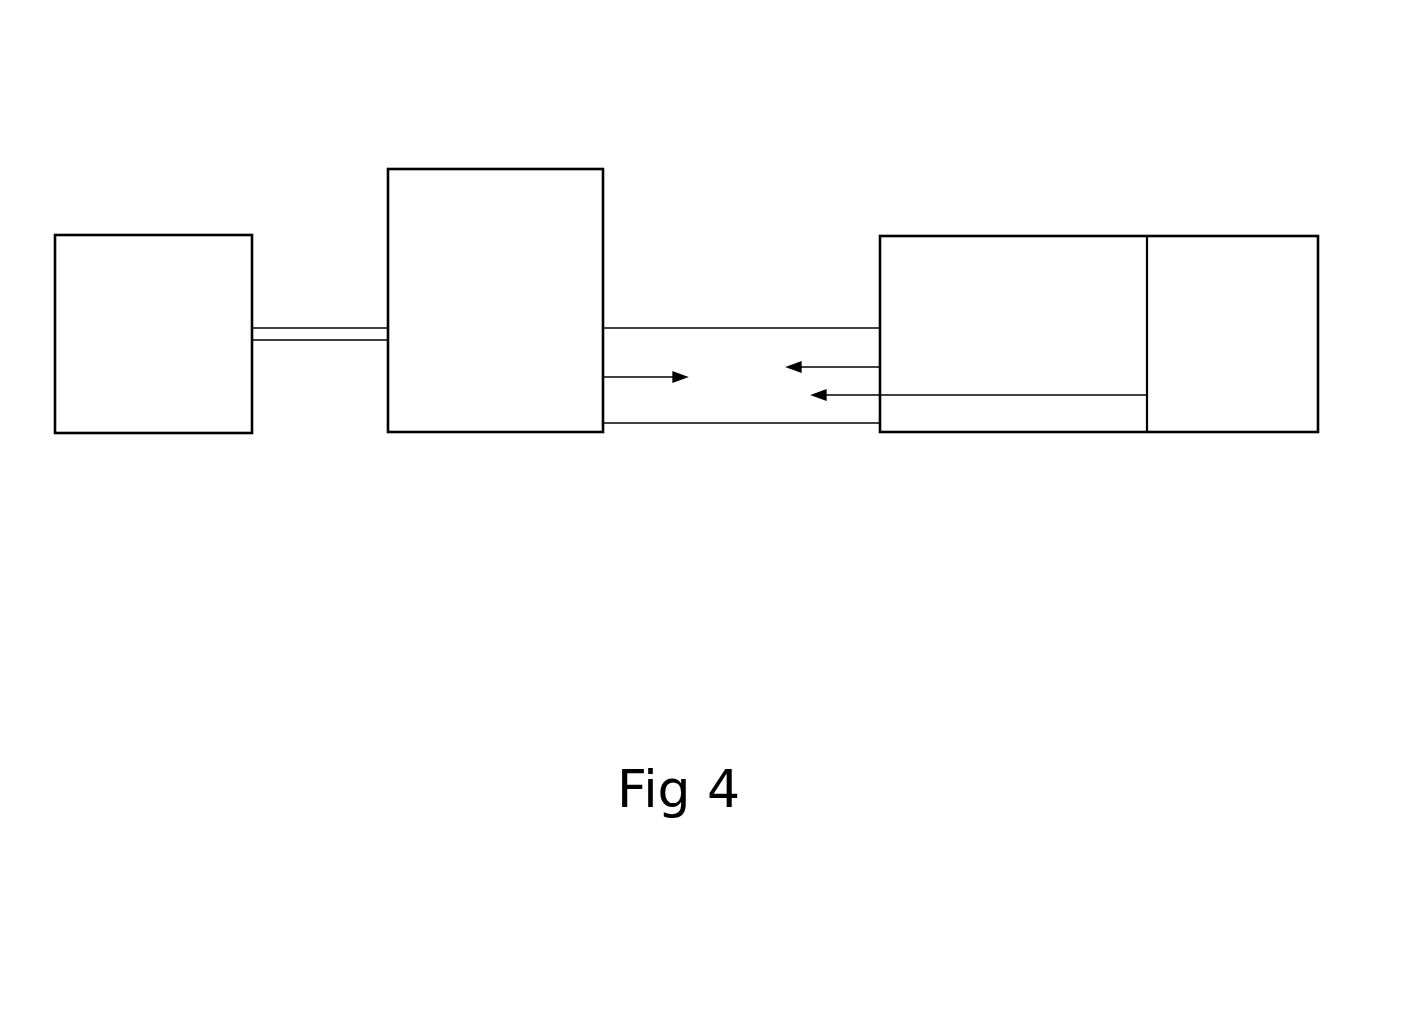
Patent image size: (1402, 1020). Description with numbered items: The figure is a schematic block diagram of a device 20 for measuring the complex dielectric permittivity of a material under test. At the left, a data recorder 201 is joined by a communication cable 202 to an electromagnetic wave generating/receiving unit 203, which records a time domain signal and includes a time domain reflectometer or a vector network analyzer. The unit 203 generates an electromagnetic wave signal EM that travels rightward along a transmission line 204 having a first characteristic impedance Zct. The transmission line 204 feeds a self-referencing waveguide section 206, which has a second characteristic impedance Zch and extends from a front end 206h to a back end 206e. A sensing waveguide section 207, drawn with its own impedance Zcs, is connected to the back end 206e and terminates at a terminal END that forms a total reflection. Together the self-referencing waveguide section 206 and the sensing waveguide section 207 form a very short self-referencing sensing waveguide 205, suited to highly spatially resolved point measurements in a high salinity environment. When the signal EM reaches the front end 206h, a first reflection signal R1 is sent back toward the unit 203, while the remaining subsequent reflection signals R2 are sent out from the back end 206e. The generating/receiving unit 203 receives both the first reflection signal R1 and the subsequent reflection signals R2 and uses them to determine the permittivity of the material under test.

The device 20 is at (53, 79).
The data recorder 201 is at (155, 235).
The communication cable 202 is at (321, 328).
The electromagnetic wave generating/receiving unit 203 is at (496, 169).
The transmission line 204 is at (743, 328).
The self-referencing sensing waveguide 205 is at (1318, 218).
The self-referencing waveguide section 206 is at (1147, 151).
The sensing waveguide section 207 is at (1318, 151).
The front end 206h is at (877, 448).
The back end 206e is at (1143, 448).
The electromagnetic wave signal EM is at (664, 379).
The first reflection signal R1 is at (815, 369).
The remaining subsequent reflection signals R2 is at (961, 397).
The terminal END is at (1318, 252).
The first characteristic impedance Zct is at (678, 450).
The second characteristic impedance Zch is at (1008, 482).
The solid section impedance Zcs is at (1238, 482).